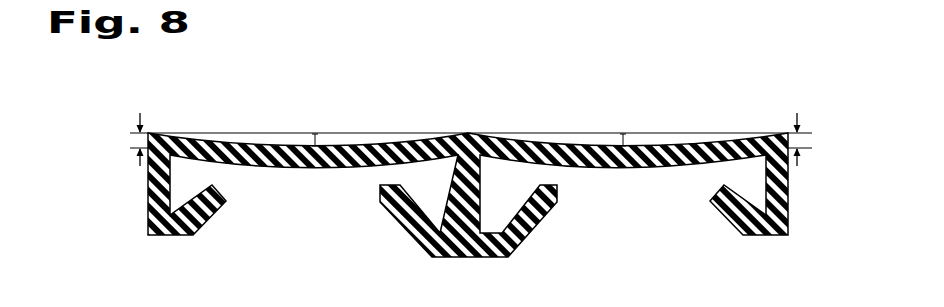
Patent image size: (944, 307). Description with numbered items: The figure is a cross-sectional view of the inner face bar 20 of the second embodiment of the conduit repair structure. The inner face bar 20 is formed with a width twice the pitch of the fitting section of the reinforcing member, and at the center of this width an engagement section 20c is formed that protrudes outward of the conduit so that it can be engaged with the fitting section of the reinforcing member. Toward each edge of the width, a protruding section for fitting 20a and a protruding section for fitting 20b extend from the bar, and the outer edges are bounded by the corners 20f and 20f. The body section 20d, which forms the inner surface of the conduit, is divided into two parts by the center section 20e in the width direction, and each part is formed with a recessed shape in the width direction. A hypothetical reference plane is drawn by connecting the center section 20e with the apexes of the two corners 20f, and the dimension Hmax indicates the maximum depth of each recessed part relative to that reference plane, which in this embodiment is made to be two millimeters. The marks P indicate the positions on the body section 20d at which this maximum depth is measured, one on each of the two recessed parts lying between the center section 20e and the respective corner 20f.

The inner face bar 20 is at (143, 238).
The protruding section for fitting 20a is at (208, 220).
The protruding section for fitting 20b is at (733, 217).
The engagement section 20c is at (470, 235).
The body section 20d is at (343, 146).
The center section 20e is at (472, 133).
The corner 20f is at (153, 132).
The pitch / position on top plate P is at (265, 133).
The maximum height difference Hmax is at (469, 139).